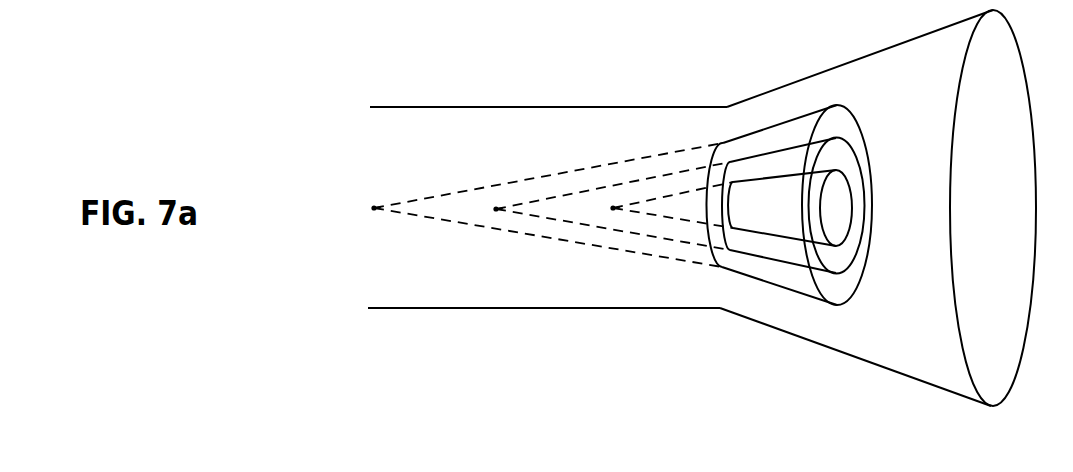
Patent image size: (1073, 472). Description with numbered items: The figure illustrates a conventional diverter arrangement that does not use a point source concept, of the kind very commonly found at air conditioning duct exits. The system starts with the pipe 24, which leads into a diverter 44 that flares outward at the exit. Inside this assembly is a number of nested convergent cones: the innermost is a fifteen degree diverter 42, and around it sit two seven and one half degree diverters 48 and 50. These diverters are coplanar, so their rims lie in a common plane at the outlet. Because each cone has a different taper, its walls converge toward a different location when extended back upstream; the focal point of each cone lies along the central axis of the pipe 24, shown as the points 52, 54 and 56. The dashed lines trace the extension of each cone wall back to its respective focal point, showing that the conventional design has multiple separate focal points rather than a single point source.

The pipe 24 is at (547, 242).
The diverter 44 is at (878, 208).
The 7.5 degree diverter 50 is at (789, 171).
The 7.5 degree diverter 48 is at (793, 187).
The 15 degree diverter 42 is at (777, 177).
The focal point 52 is at (528, 202).
The focal point 54 is at (589, 192).
The focal point 56 is at (646, 175).